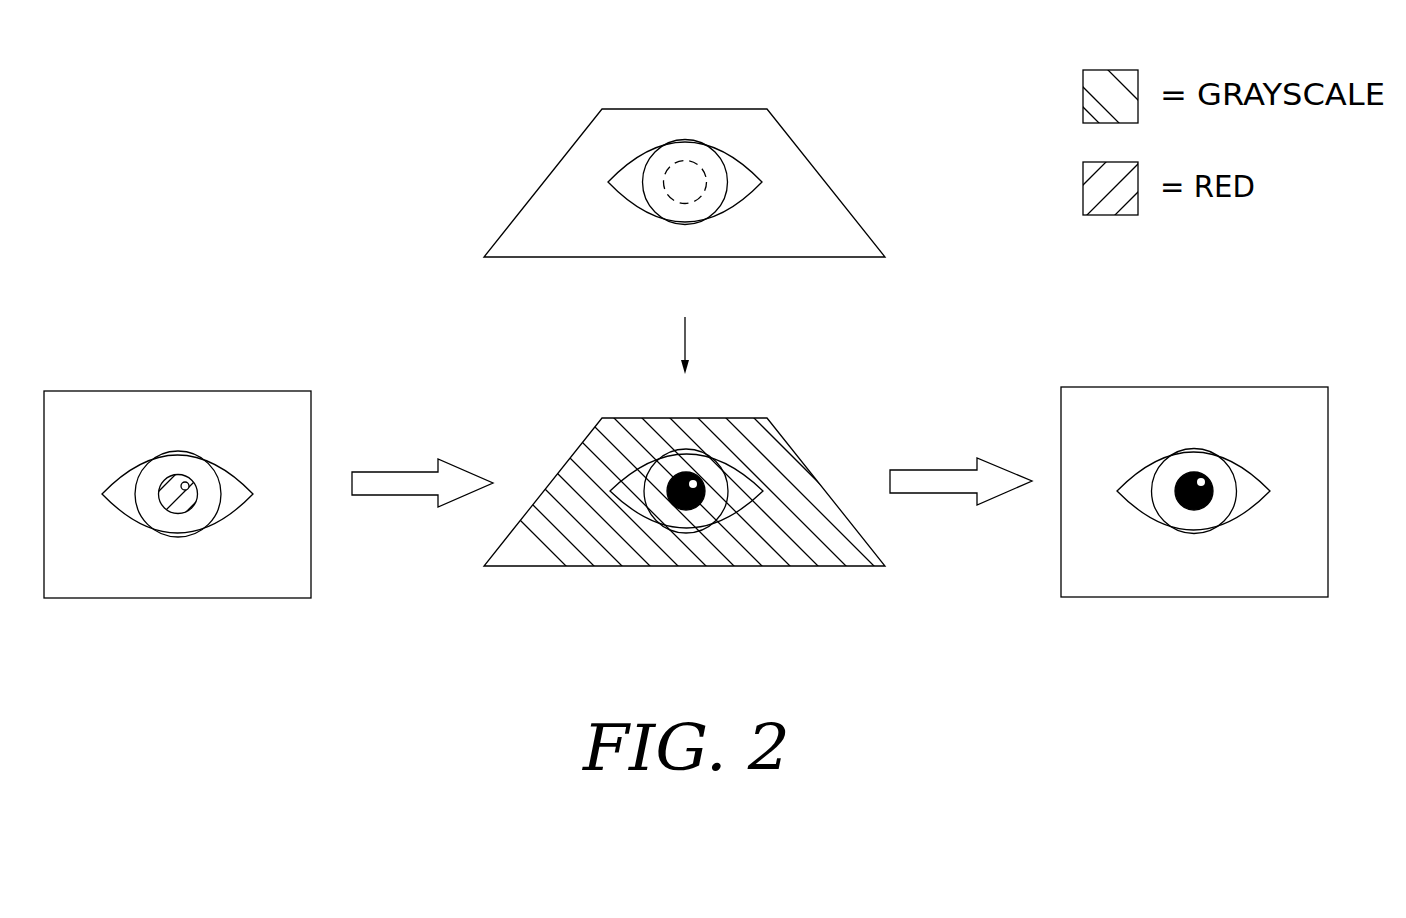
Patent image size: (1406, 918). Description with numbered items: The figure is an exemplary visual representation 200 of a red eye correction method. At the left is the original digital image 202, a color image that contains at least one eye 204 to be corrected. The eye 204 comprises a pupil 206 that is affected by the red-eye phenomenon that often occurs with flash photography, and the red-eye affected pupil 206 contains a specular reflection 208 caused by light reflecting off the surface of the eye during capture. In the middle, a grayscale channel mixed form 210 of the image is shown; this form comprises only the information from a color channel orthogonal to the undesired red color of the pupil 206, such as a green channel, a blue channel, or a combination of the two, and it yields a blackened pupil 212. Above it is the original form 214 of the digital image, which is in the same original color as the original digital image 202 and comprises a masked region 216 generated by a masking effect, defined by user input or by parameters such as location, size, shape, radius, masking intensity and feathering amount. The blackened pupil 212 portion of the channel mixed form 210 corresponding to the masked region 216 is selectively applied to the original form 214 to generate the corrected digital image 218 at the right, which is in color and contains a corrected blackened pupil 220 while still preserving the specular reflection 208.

The exemplary visual representation 200 is at (320, 253).
The original digital image 202 is at (182, 390).
The eye 204 is at (189, 455).
The pupil 206 is at (167, 475).
The specular reflection 208 is at (181, 498).
The channel mixed form 210 is at (735, 418).
The blackened pupil 212 is at (683, 512).
The original form 214 is at (688, 108).
The masked region 216 is at (701, 193).
The corrected digital image 218 is at (1199, 387).
The blackened pupil 220 is at (1188, 510).